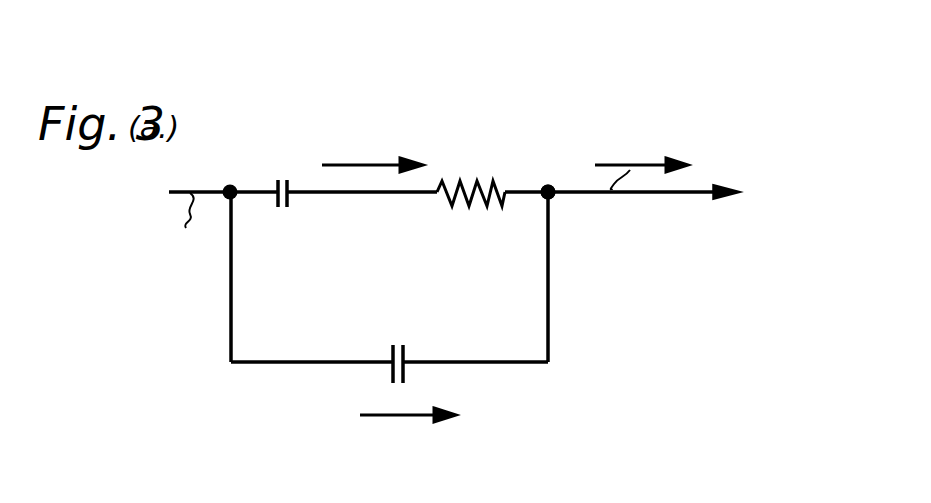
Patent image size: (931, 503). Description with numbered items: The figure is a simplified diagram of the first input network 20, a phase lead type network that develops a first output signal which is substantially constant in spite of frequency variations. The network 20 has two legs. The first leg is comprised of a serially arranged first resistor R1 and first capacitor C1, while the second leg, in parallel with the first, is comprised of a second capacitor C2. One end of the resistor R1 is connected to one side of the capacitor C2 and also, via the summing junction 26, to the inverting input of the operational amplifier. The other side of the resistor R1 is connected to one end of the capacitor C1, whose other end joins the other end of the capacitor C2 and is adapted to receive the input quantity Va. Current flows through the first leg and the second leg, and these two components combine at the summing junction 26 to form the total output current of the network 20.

The first input network 20 is at (453, 221).
The summing junction 26 is at (596, 194).
The first capacitor C1 is at (288, 204).
The first resistor R1 is at (478, 206).
The second capacitor C2 is at (397, 344).